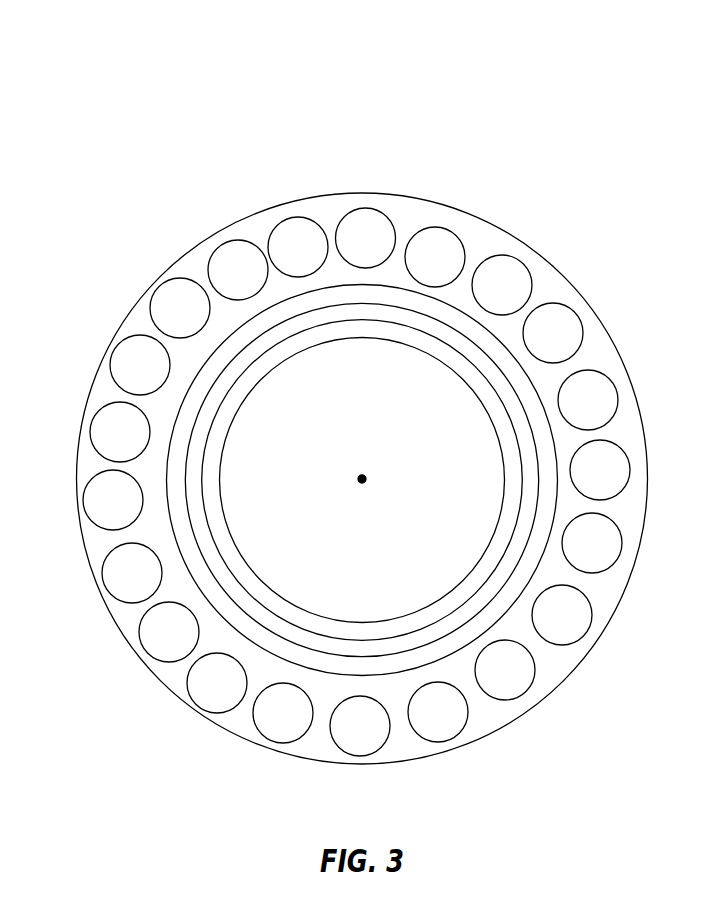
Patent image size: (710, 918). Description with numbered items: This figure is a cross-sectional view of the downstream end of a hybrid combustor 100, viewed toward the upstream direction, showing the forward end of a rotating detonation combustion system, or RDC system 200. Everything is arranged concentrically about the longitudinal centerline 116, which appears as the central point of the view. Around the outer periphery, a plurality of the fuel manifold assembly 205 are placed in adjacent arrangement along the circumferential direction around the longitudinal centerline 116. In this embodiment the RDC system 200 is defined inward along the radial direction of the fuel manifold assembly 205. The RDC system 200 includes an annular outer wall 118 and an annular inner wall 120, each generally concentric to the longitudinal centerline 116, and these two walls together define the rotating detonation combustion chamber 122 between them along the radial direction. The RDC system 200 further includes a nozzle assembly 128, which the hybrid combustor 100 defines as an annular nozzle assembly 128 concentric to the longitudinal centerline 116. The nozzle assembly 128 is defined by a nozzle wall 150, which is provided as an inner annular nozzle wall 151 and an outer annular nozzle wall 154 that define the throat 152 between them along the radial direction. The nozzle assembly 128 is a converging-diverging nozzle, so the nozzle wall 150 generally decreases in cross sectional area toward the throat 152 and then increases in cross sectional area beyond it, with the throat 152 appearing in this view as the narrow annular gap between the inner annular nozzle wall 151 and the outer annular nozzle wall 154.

The hybrid combustor 100 is at (386, 116).
The fuel manifold assembly 205 is at (366, 209).
The throat 152 is at (306, 312).
The annular outer wall 118 is at (483, 347).
The inner annular nozzle wall 151 is at (518, 377).
The nozzle wall 150 is at (521, 391).
The annular inner wall 120 is at (416, 353).
The outer annular nozzle wall 154 is at (483, 390).
The RDC system 200 is at (277, 392).
The rotating detonation combustion chamber 122 is at (210, 465).
The longitudinal centerline 116 is at (363, 483).
The nozzle assembly 128 is at (482, 626).